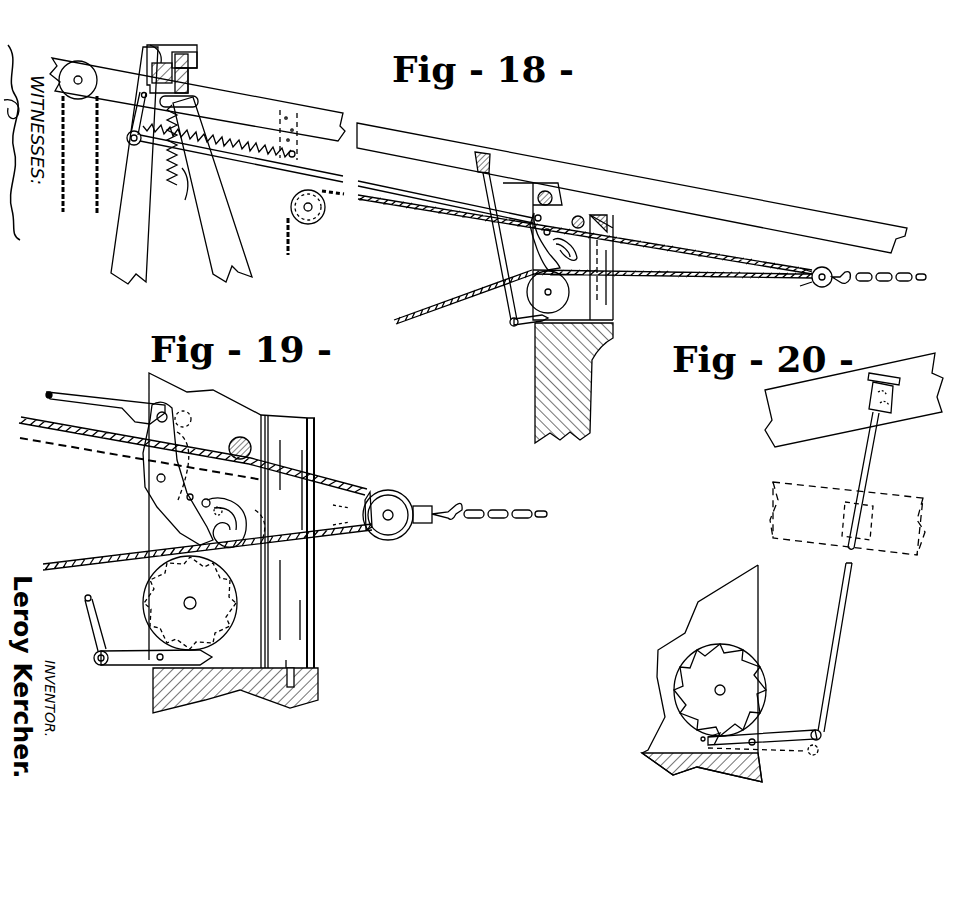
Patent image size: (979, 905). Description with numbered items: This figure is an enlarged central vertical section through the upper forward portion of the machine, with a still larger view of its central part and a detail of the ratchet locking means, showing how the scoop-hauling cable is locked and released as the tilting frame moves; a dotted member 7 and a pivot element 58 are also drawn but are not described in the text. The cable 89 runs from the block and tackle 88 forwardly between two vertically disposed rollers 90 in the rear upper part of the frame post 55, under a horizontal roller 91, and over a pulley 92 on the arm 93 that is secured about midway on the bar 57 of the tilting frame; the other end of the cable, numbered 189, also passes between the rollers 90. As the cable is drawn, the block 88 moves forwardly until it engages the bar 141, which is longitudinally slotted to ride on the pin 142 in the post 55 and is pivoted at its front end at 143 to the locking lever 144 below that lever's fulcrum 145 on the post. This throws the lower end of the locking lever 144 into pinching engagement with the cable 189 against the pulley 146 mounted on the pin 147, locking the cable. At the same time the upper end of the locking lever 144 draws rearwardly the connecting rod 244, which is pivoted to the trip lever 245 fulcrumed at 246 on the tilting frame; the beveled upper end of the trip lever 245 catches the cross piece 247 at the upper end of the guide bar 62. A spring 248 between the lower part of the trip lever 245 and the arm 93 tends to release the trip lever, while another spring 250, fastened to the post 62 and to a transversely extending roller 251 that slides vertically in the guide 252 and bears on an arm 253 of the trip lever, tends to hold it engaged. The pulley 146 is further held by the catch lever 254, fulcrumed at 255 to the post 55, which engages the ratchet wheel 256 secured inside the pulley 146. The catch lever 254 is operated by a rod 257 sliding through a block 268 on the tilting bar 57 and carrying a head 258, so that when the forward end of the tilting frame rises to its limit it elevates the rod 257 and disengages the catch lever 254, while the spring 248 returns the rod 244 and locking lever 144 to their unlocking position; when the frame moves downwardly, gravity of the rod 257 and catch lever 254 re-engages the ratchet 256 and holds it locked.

In FIG. 20, the dashed frame member 7 is at (852, 518).
In FIG. 18, the frame post 55 is at (543, 376).
In FIG. 19, the frame post 55 is at (235, 673).
In FIG. 20, the frame post 55 is at (702, 673).
In FIG. 18, the bar of the tilting frame 57 is at (601, 176).
In FIG. 20, the bar of the tilting frame 57 is at (854, 400).
In FIG. 18, the pivot bolt 58 is at (545, 190).
In FIG. 18, the guide bar 62 is at (130, 237).
In FIG. 18, the block and tackle 88 is at (831, 274).
In FIG. 19, the block and tackle 88 is at (402, 500).
In FIG. 18, the cable 89 is at (421, 209).
In FIG. 18, the vertically disposed rollers 90 is at (605, 305).
In FIG. 19, the vertically disposed rollers 90 is at (300, 610).
In FIG. 18, the horizontal roller 91 is at (584, 220).
In FIG. 19, the horizontal roller 91 is at (246, 438).
In FIG. 18, the pulley 92 is at (316, 219).
In FIG. 18, the arm 93 is at (302, 158).
In FIG. 18, the bar 141 is at (577, 245).
In FIG. 19, the bar 141 is at (210, 498).
In FIG. 19, the pin 142 is at (221, 508).
In FIG. 19, the pivot 143 is at (191, 494).
In FIG. 18, the locking lever 144 is at (541, 240).
In FIG. 19, the locking lever 144 is at (165, 508).
In FIG. 18, the fulcrum 145 is at (551, 231).
In FIG. 19, the fulcrum 145 is at (156, 479).
In FIG. 18, the pulley 146 is at (557, 299).
In FIG. 19, the pulley 146 is at (231, 586).
In FIG. 18, the pin 147 is at (552, 291).
In FIG. 19, the pin 147 is at (190, 597).
In FIG. 20, the pin 147 is at (716, 689).
In FIG. 18, the cable 189 is at (97, 150).
In FIG. 19, the cable 189 is at (109, 566).
In FIG. 18, the connecting rod 244 is at (415, 184).
In FIG. 19, the connecting rod 244 is at (98, 400).
In FIG. 18, the trip lever 245 is at (140, 117).
In FIG. 18, the fulcrum 246 is at (141, 94).
In FIG. 18, the cross piece 247 is at (155, 70).
In FIG. 18, the spring 248 is at (249, 158).
In FIG. 18, the spring 250 is at (176, 192).
In FIG. 18, the roller 251 is at (190, 82).
In FIG. 18, the guide 252 is at (197, 58).
In FIG. 18, the arm 253 is at (196, 103).
In FIG. 20, the catch lever 254 is at (786, 733).
In FIG. 18, the fulcrum 255 is at (526, 326).
In FIG. 20, the fulcrum 255 is at (762, 750).
In FIG. 20, the ratchet wheel 256 is at (737, 656).
In FIG. 18, the rod 257 is at (501, 251).
In FIG. 20, the rod 257 is at (840, 616).
In FIG. 20, the head 258 is at (893, 373).
In FIG. 20, the block 268 is at (884, 412).